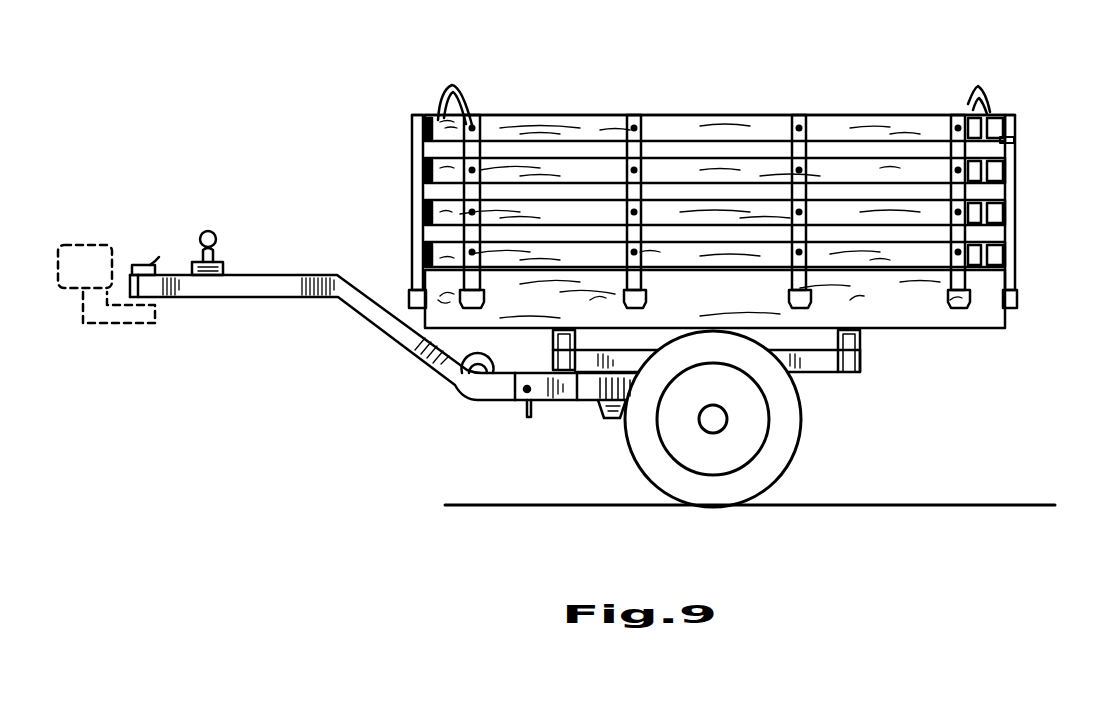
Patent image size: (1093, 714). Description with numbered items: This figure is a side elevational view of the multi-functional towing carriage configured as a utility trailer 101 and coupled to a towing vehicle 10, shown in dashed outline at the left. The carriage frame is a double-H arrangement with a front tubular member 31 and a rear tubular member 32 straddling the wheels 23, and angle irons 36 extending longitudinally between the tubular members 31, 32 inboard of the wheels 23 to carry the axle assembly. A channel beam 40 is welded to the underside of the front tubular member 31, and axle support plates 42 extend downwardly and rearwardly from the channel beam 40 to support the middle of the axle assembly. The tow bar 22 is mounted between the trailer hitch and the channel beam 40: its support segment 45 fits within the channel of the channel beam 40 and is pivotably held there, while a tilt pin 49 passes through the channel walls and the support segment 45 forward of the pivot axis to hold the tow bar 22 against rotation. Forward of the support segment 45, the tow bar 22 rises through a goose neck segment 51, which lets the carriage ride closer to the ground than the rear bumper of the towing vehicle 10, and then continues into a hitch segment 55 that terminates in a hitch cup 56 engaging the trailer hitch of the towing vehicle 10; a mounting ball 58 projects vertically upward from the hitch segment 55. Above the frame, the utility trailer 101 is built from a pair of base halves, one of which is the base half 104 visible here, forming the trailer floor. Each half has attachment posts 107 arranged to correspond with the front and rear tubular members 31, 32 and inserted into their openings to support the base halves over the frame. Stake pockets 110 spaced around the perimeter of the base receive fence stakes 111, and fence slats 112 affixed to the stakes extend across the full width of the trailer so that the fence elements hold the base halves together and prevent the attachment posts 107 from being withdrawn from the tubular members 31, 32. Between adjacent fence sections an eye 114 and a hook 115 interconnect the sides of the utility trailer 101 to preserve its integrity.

The towing vehicle 10 is at (78, 245).
The hitch cup 56 is at (146, 264).
The mounting ball 58 is at (210, 232).
The hitch segment 55 is at (251, 292).
The tow bar 22 is at (357, 318).
The goose neck segment 51 is at (400, 334).
The support segment 45 is at (484, 390).
The tilt pin 49 is at (528, 416).
The front tubular member 31 is at (570, 402).
The channel beam 40 is at (599, 392).
The axle support plates 42 is at (618, 418).
The wheels 23 is at (768, 472).
The attachment posts 107 is at (552, 362).
The angle irons 36 is at (820, 370).
The rear tubular member 32 is at (862, 370).
The base half 104 is at (990, 320).
The utility trailer 101 is at (1017, 118).
The fence stakes 111 is at (482, 124).
The stake pockets 110 is at (485, 298).
The hook 115 is at (447, 90).
The fence slats 112 is at (1010, 124).
The eye 114 is at (1014, 140).